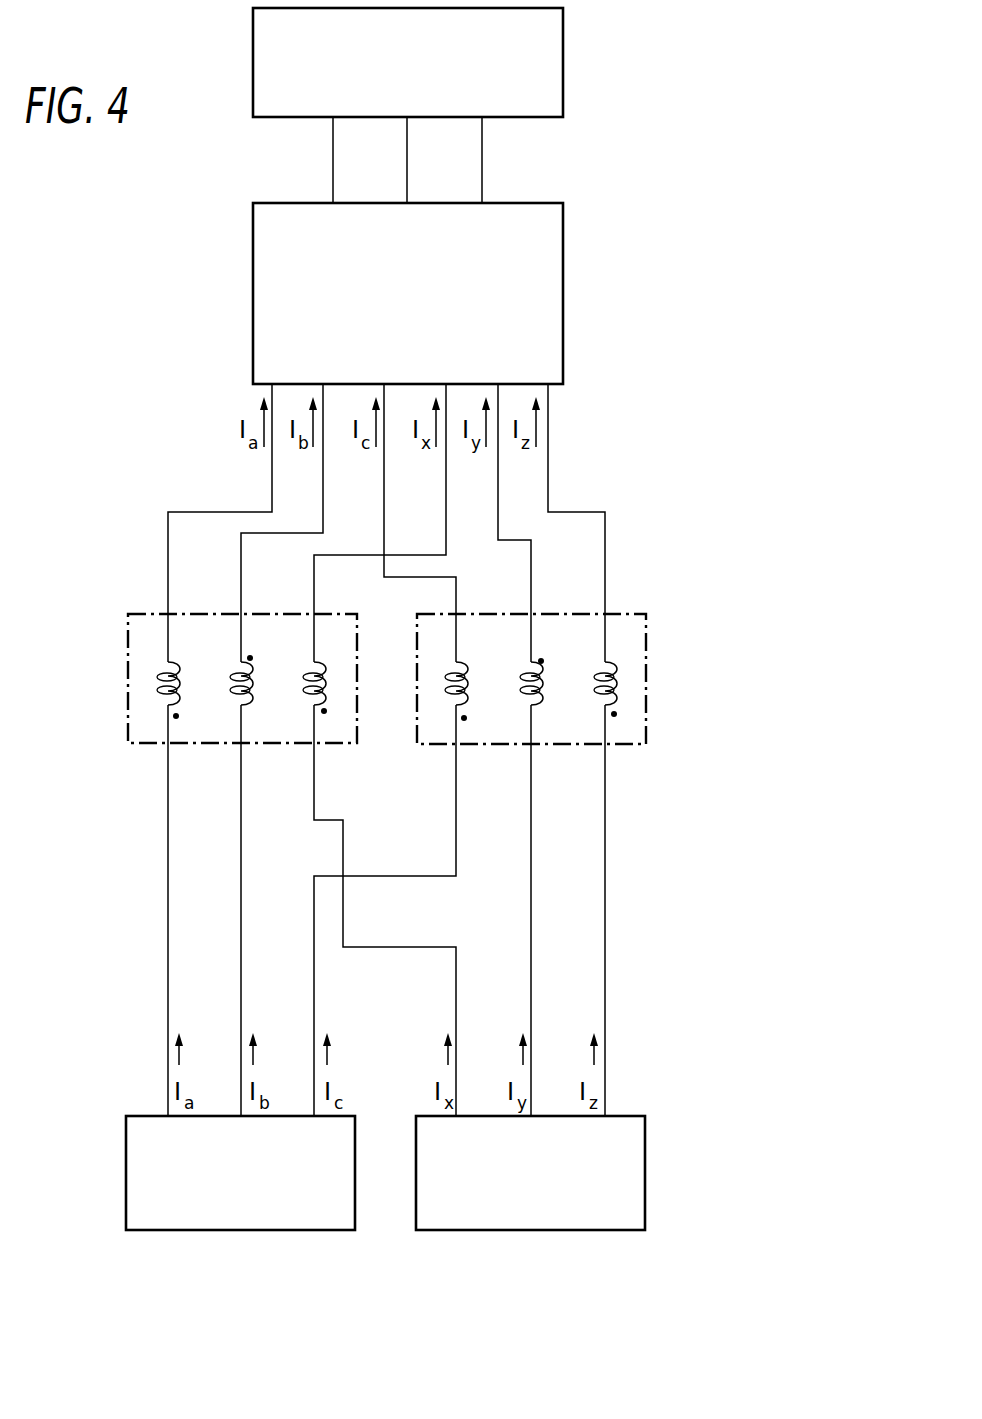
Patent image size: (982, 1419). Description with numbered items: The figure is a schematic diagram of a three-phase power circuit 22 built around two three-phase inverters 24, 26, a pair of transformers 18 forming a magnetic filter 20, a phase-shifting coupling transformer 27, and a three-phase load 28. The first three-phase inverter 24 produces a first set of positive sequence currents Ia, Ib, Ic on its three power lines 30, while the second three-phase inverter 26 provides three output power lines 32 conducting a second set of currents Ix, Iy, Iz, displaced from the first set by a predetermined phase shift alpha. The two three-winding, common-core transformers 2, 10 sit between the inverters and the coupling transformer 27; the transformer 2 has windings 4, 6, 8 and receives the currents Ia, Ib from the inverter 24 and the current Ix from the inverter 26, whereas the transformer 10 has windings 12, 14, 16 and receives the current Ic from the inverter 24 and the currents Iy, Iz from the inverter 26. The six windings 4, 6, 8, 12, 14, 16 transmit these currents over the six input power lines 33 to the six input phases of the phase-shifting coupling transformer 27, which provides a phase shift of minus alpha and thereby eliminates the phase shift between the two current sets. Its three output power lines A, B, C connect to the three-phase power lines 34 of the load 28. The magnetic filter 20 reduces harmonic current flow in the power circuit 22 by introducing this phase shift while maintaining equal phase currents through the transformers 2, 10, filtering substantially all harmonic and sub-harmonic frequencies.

The three-phase load 28 is at (563, 32).
The three-phase power lines 34 is at (482, 178).
The phase-shifting coupling transformer 27 is at (563, 243).
The magnetic filter 20 is at (574, 313).
The input power lines 33 is at (384, 494).
The three-winding common-core transformer 2 is at (222, 702).
The winding 4 is at (168, 663).
The winding 6 is at (241, 663).
The winding 8 is at (314, 663).
The three-winding common-core transformer 10 is at (545, 705).
The winding 12 is at (456, 663).
The winding 14 is at (531, 663).
The winding 16 is at (605, 663).
The pair of transformers 18 is at (429, 757).
The power lines 30 is at (314, 990).
The output power lines 32 is at (456, 990).
The three-phase inverter 24 is at (167, 1230).
The three-phase inverter 26 is at (462, 1232).
The three-phase power circuit 22 is at (405, 1324).